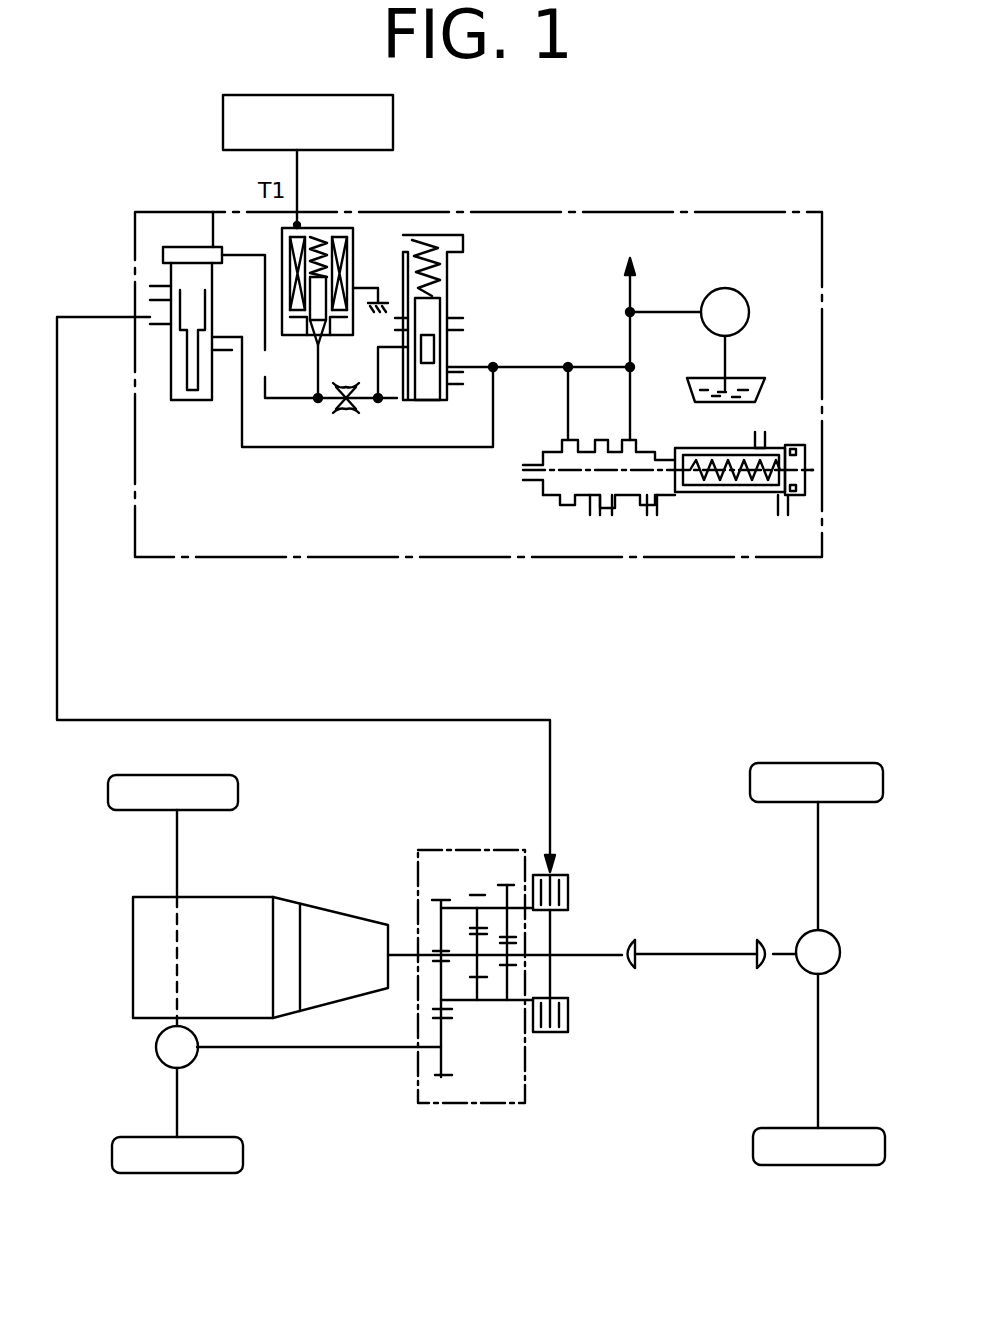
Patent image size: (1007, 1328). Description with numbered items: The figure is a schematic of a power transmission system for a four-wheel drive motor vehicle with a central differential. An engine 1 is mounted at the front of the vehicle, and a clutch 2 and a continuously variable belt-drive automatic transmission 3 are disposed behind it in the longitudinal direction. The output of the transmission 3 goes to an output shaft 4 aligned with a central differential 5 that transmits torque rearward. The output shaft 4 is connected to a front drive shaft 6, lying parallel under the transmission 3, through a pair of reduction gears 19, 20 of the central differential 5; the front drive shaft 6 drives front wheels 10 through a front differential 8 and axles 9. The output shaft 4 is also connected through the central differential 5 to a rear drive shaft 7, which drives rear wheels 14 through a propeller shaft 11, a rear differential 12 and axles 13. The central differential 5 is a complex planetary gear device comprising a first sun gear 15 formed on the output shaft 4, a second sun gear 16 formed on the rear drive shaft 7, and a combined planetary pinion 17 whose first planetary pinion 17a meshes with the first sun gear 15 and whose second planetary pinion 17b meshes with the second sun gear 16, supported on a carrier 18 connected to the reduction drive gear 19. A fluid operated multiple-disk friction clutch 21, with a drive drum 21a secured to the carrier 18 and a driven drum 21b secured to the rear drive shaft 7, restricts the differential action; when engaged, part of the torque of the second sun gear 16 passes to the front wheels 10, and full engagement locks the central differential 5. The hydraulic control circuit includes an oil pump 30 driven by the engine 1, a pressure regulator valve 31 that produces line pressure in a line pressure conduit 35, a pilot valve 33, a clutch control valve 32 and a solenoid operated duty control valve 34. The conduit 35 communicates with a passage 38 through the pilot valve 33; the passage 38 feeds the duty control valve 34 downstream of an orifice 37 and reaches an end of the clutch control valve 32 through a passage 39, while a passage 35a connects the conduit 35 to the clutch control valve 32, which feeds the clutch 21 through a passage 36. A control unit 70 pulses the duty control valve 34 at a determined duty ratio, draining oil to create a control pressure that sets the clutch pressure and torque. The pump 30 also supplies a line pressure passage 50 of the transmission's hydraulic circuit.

The engine 1 is at (140, 929).
The clutch 2 is at (290, 895).
The continuously variable belt-drive automatic transmission 3 is at (360, 907).
The output shaft 4 is at (410, 960).
The central differential 5 is at (488, 1104).
The front drive shaft 6 is at (296, 1048).
The rear drive shaft 7 is at (624, 965).
The front differential 8 is at (156, 1048).
The axles 9 is at (174, 849).
The front wheels 10 is at (168, 775).
The propeller shaft 11 is at (678, 952).
The rear differential 12 is at (838, 962).
The axles 13 is at (819, 1042).
The rear wheels 14 is at (866, 803).
The first sun gear 15 is at (486, 977).
The second sun gear 16 is at (486, 1003).
The combined planetary pinion 17 is at (488, 922).
The first planetary pinion 17a is at (475, 893).
The second planetary pinion 17b is at (509, 880).
The carrier 18 is at (434, 898).
The reduction drive gear 19 is at (432, 896).
The reduction gear 20 is at (441, 1077).
The fluid operated multiple-disk friction clutch 21 is at (587, 920).
The drive drum 21a is at (560, 876).
The driven drum 21b is at (553, 933).
The oil pump 30 is at (747, 325).
The pressure regulator valve 31 is at (665, 445).
The clutch control valve 32 is at (212, 242).
The pilot valve 33 is at (452, 280).
The solenoid operated duty control valve 34 is at (337, 228).
The line pressure conduit 35 is at (532, 366).
The passage 35a is at (396, 447).
The passage 36 is at (98, 316).
The orifice 37 is at (346, 389).
The passage 38 is at (360, 401).
The passage 39 is at (300, 400).
The line pressure passage 50 is at (633, 282).
The control unit 70 is at (393, 117).